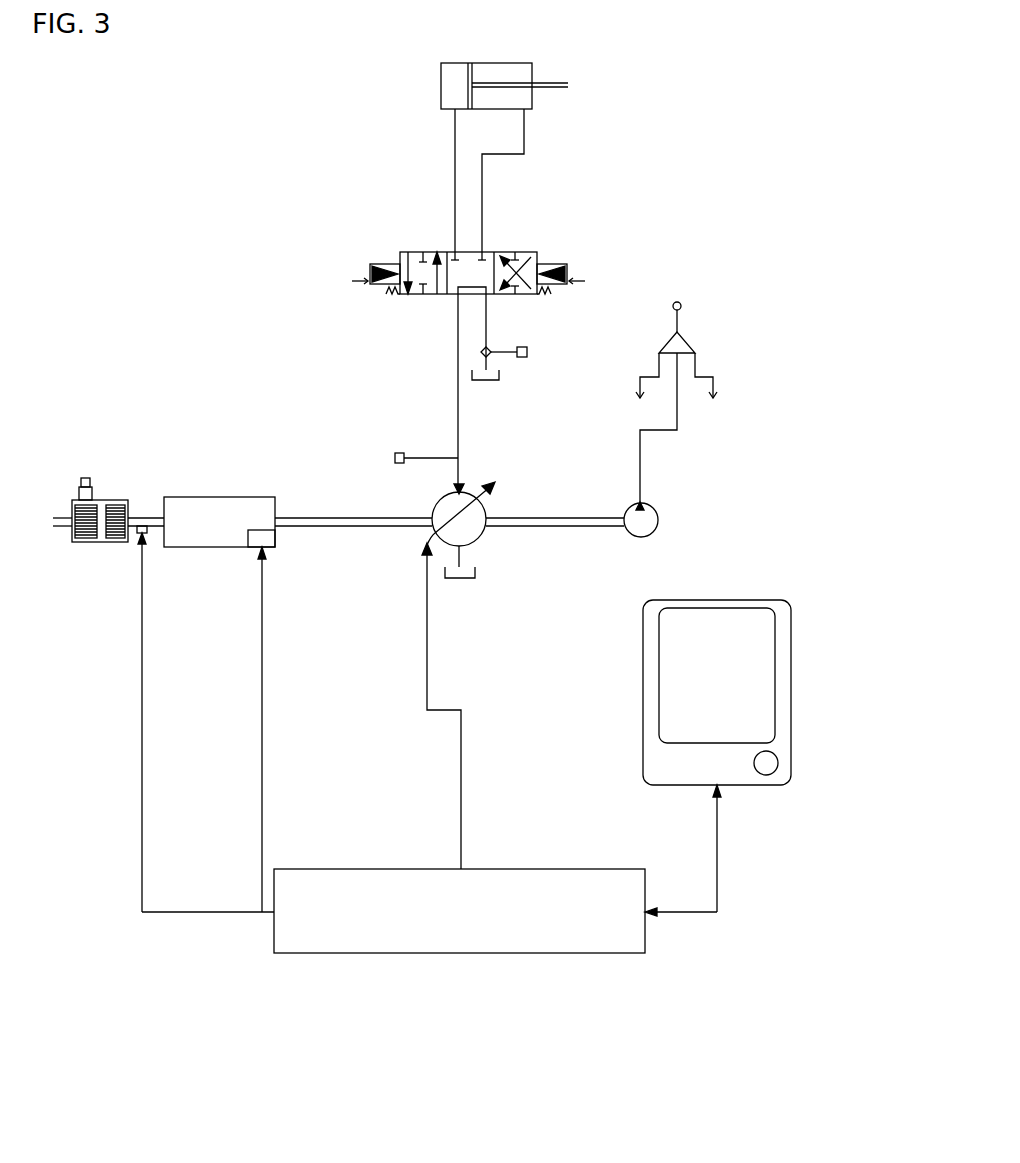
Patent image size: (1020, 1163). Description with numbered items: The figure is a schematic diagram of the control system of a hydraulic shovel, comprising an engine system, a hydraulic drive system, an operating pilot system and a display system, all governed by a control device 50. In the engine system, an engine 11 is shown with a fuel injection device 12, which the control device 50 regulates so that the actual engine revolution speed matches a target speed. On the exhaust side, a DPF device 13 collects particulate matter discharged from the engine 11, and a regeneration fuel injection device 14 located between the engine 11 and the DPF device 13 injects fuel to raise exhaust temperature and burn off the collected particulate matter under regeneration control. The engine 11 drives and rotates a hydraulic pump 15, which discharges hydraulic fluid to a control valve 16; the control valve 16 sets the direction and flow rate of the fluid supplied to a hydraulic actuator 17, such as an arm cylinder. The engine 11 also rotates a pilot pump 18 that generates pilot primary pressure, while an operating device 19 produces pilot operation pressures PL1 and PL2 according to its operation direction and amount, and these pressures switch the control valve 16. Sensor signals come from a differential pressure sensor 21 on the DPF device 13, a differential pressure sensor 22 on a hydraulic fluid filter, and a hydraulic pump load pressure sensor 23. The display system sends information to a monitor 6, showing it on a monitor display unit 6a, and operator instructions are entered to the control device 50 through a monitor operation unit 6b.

The monitor 6 is at (744, 674).
The monitor display unit 6a is at (770, 673).
The monitor operation unit 6b is at (778, 758).
The engine 11 is at (200, 550).
The fuel injection device 12 is at (276, 549).
The DPF device 13 is at (80, 546).
The regeneration fuel injection device 14 is at (135, 541).
The hydraulic pump 15 is at (432, 506).
The control valve 16 is at (530, 254).
The hydraulic actuator 17 is at (456, 66).
The pilot pump 18 is at (640, 538).
The operating device 19 is at (686, 336).
The differential pressure sensor 21 is at (82, 478).
The differential pressure sensor 22 is at (523, 347).
The hydraulic pump load pressure sensor 23 is at (395, 455).
The control device 50 is at (292, 955).